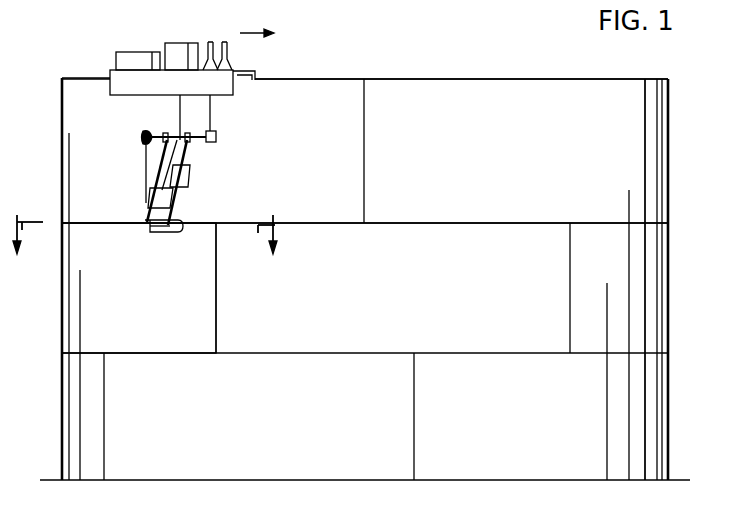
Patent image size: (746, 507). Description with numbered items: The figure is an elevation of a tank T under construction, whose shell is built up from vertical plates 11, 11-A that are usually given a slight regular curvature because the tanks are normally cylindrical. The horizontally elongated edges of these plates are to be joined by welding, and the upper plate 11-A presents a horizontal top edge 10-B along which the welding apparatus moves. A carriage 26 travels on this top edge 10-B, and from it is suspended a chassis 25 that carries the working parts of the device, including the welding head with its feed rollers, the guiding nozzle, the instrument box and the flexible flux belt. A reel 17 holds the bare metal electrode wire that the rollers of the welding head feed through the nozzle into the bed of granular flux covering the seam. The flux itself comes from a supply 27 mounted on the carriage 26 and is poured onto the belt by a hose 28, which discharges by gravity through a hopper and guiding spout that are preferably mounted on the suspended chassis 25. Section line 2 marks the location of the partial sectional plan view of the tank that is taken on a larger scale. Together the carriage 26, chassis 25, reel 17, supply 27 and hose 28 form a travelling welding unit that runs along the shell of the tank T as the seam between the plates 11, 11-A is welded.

The horizontal top edge 10-B is at (77, 78).
The upper plate 11-A is at (62, 165).
The vertical plate 11 is at (62, 322).
The reel 17 is at (147, 132).
The chassis 25 is at (158, 163).
The carriage 26 is at (258, 72).
The flux supply 27 is at (166, 49).
The hose 28 is at (182, 102).
The tank T is at (670, 172).
The section line 2- 2 is at (146, 246).